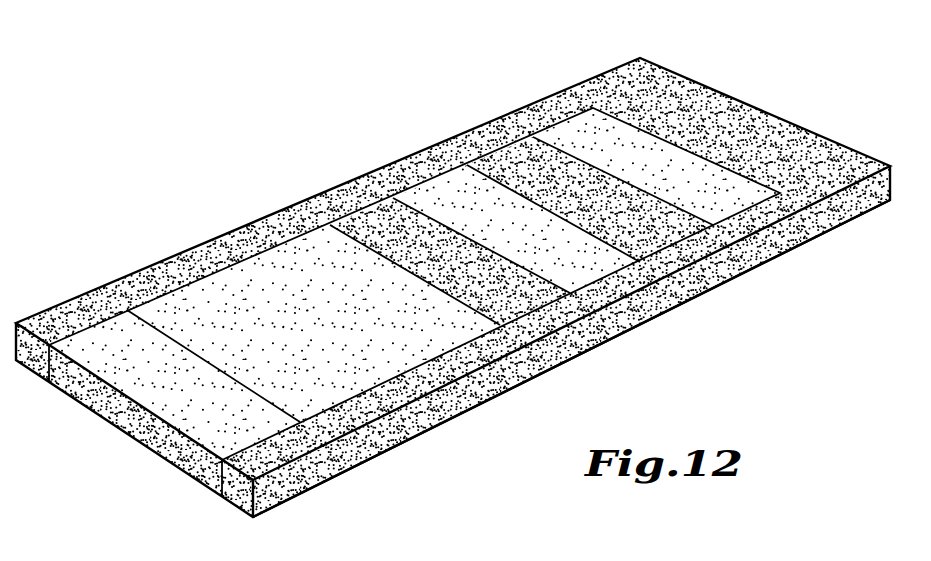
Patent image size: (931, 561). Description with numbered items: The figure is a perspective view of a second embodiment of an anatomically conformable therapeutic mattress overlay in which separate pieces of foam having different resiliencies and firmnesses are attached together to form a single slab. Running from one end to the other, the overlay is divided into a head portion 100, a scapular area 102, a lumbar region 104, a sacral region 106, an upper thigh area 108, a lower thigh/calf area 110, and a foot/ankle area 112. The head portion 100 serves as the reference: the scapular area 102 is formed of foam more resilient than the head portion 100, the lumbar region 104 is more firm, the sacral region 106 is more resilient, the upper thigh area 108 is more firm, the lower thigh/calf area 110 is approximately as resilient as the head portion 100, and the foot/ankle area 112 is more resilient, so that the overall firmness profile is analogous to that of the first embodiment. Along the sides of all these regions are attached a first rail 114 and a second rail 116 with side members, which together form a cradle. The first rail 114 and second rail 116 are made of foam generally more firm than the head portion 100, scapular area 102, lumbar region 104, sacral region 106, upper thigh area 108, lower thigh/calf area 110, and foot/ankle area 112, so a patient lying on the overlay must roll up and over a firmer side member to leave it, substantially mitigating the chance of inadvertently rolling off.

The head portion 100 is at (757, 120).
The scapular area 102 is at (573, 127).
The lumbar region 104 is at (517, 157).
The sacral region 106 is at (443, 193).
The upper thigh area 108 is at (378, 215).
The lower thigh/calf area 110 is at (302, 267).
The foot/ankle area 112 is at (185, 420).
The first rail 114 is at (163, 270).
The second rail 116 is at (393, 433).